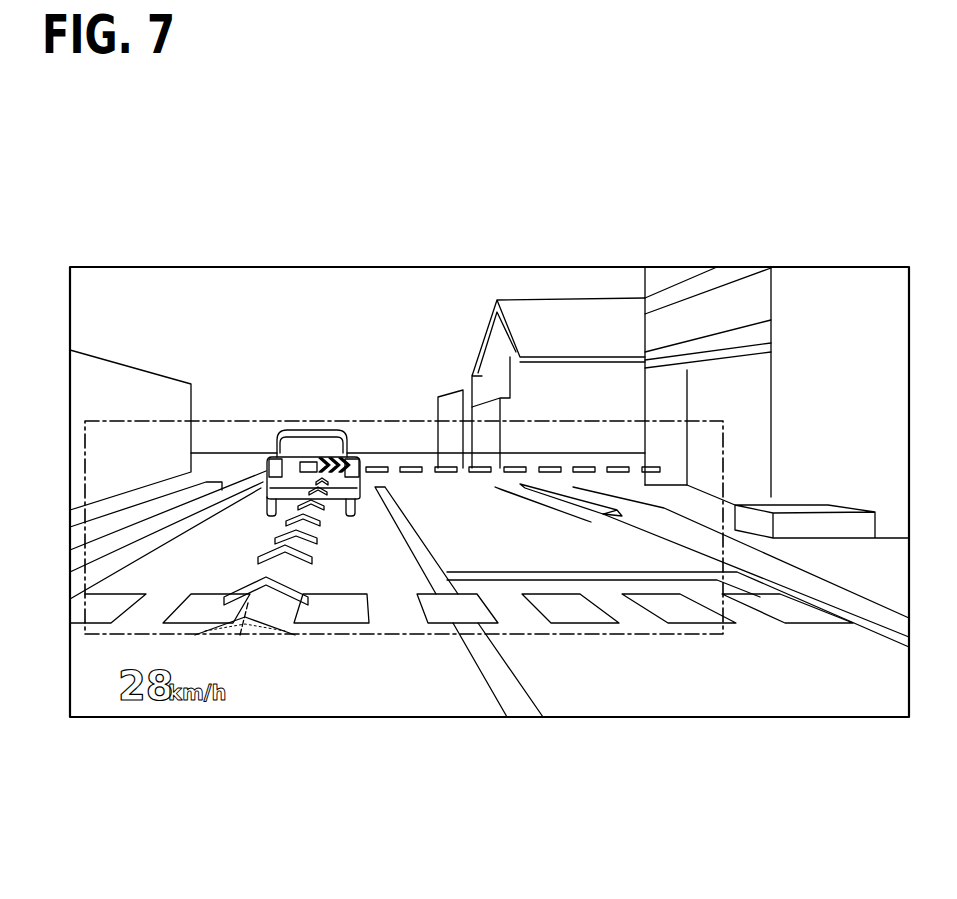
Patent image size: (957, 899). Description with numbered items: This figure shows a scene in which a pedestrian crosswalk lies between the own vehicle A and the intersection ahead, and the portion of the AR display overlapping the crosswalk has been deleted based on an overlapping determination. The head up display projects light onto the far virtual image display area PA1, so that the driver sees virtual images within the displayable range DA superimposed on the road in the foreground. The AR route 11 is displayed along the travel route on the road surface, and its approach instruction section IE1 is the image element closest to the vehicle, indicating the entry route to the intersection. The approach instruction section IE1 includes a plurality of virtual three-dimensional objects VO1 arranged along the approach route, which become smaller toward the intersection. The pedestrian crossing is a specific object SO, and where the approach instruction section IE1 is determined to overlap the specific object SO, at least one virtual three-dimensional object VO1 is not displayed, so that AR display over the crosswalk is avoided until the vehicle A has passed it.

The vehicle A is at (93, 305).
The specific object SO is at (188, 590).
The virtual three-dimensional object VO1 is at (310, 558).
The approach instruction section IE1 is at (241, 690).
The AR route 11 is at (242, 640).
The far virtual image display area PA1 is at (404, 599).
The displayable range DA is at (600, 634).